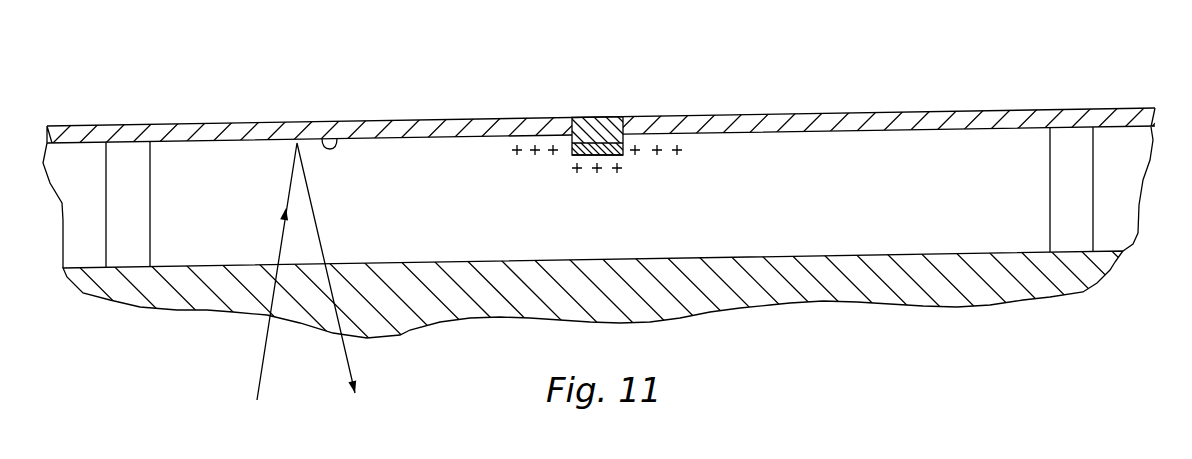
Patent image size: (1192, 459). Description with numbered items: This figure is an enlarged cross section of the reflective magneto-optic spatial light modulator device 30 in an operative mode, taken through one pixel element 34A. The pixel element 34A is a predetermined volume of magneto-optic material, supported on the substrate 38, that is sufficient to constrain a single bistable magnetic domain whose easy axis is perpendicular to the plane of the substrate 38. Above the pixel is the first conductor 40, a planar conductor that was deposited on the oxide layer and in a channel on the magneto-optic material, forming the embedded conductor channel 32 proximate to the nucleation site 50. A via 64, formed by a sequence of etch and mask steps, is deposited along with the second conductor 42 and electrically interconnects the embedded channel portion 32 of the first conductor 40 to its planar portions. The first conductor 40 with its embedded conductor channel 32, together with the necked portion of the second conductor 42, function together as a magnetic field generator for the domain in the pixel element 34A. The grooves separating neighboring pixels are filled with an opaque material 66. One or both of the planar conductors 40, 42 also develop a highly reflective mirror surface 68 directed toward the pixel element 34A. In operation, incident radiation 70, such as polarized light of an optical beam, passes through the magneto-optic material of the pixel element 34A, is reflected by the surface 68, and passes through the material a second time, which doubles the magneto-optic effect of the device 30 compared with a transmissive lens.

The magneto-optic spatial light modulator device 30 is at (1022, 92).
The embedded conductor channel 32 is at (625, 155).
The pixel element 34A is at (900, 199).
The substrate 38 is at (925, 297).
The first conductor 40 is at (752, 115).
The second conductor 42 is at (185, 133).
The nucleation site 50 is at (598, 172).
The via 64 is at (597, 118).
The opaque material 66 is at (127, 160).
The reflective mirror surface 68 is at (348, 133).
The incident radiation 70 is at (263, 358).